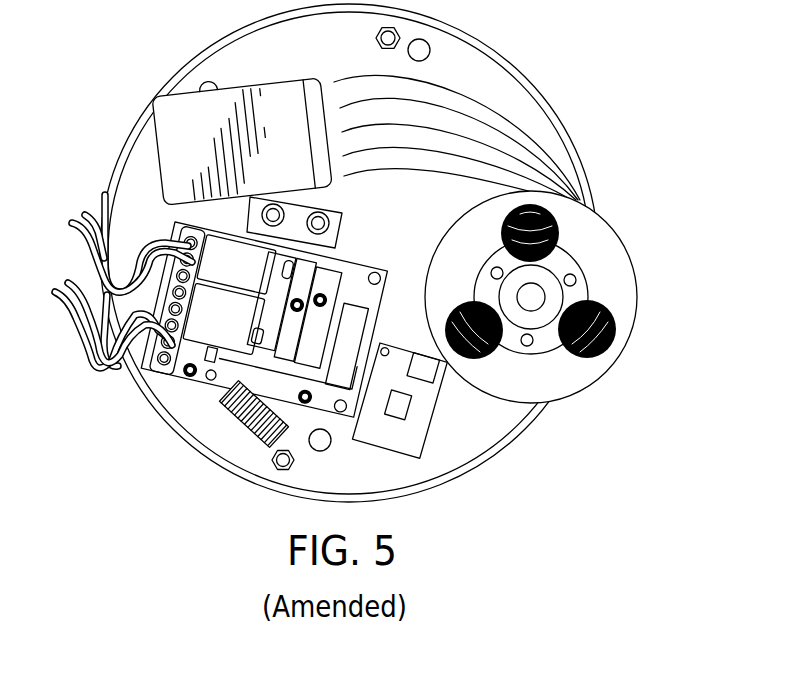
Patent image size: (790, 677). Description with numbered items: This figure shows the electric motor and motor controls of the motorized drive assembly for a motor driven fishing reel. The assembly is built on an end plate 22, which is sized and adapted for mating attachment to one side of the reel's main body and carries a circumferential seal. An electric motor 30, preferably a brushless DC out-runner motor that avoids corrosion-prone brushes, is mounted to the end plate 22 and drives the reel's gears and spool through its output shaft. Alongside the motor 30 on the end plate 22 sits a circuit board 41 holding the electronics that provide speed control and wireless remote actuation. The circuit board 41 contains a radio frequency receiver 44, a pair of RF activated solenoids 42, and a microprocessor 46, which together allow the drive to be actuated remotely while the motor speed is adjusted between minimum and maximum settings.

The end plate 22 is at (512, 425).
The electric motor 30 is at (582, 372).
The circuit board 41 is at (203, 384).
The RF activated solenoids 42 is at (119, 332).
The radio frequency receiver 44 is at (232, 428).
The microprocessor 46 is at (405, 410).